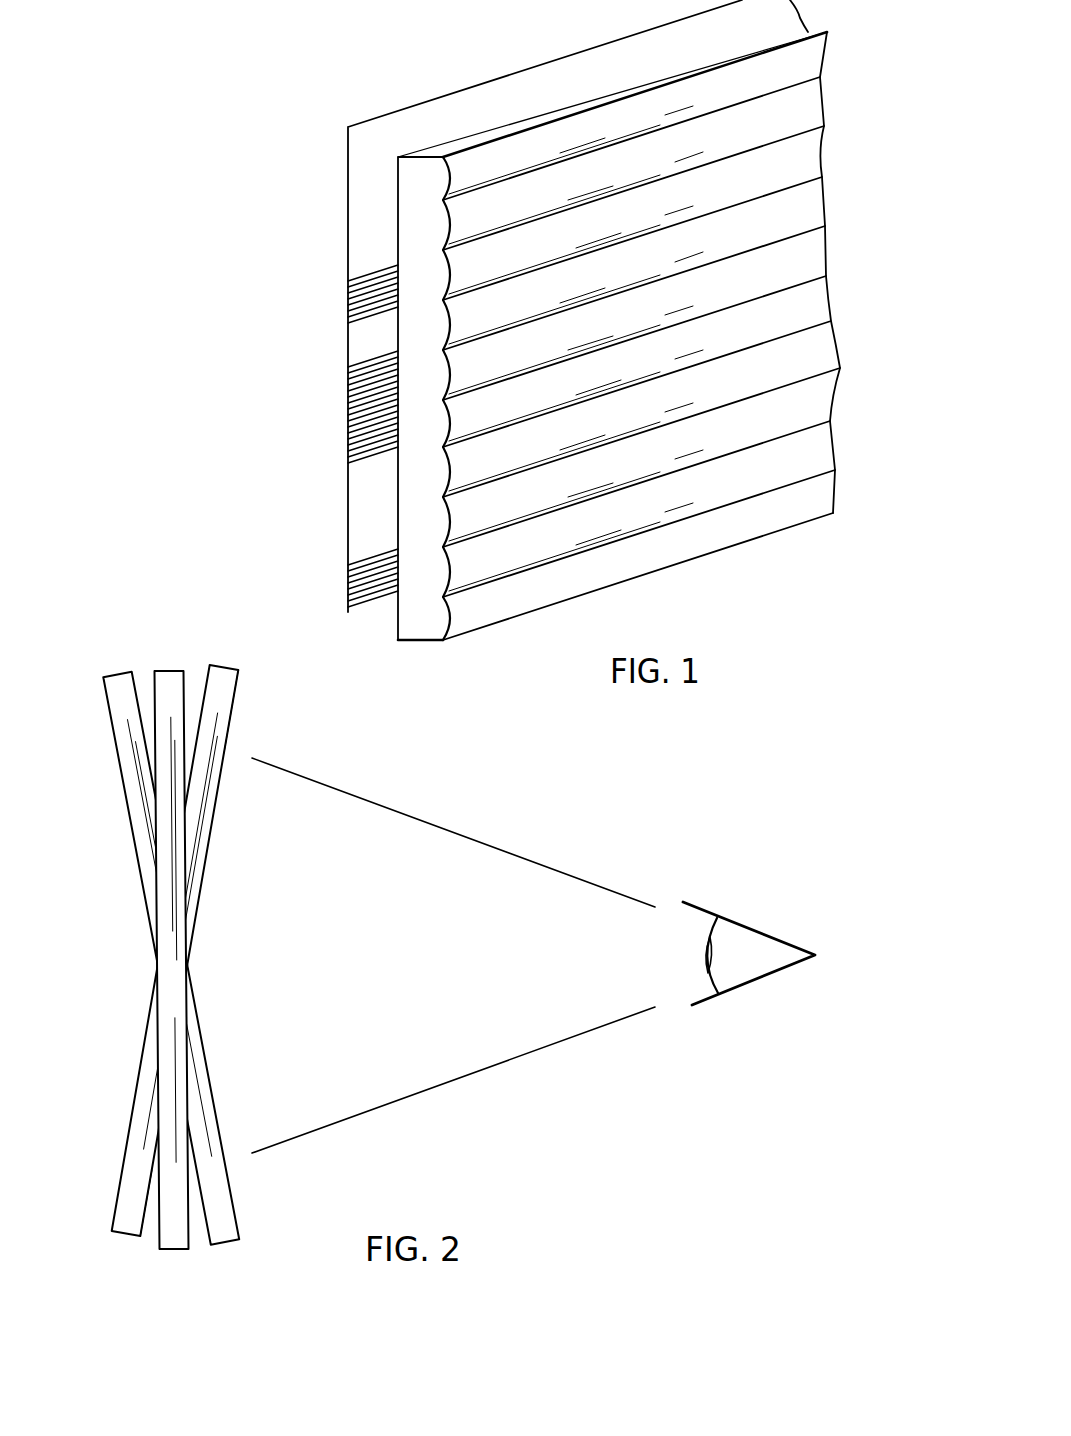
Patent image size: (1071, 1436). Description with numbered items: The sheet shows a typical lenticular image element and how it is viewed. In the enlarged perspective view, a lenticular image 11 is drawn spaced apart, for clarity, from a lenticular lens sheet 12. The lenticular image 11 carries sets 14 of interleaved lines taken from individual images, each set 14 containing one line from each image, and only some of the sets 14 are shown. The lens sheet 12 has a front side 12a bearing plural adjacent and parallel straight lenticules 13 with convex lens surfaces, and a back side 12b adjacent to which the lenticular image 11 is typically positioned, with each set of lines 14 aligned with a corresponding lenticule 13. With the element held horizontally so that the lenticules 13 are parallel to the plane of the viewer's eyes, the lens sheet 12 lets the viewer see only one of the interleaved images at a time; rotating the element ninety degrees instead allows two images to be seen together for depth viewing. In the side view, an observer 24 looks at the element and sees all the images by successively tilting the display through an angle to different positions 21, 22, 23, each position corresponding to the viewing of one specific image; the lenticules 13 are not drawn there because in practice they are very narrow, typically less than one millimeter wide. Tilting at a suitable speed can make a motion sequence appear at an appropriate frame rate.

In FIG. 1, the lenticular image 11 is at (365, 117).
In FIG. 1, the lenticular lens sheet 12 is at (573, 363).
In FIG. 2, the lenticular lens sheet 12 is at (167, 957).
In FIG. 1, the front side 12a is at (485, 613).
In FIG. 2, the front side 12a is at (215, 817).
In FIG. 1, the back side 12b is at (397, 628).
In FIG. 2, the back side 12b is at (132, 1112).
In FIG. 1, the lenticule 13 is at (573, 527).
In FIG. 1, the set of interleaved lines 14 is at (347, 280).
In FIG. 2, the first tilted position 21 is at (115, 680).
In FIG. 2, the second tilted position 22 is at (167, 678).
In FIG. 2, the third tilted position 23 is at (223, 673).
In FIG. 2, the observer 24 is at (750, 967).